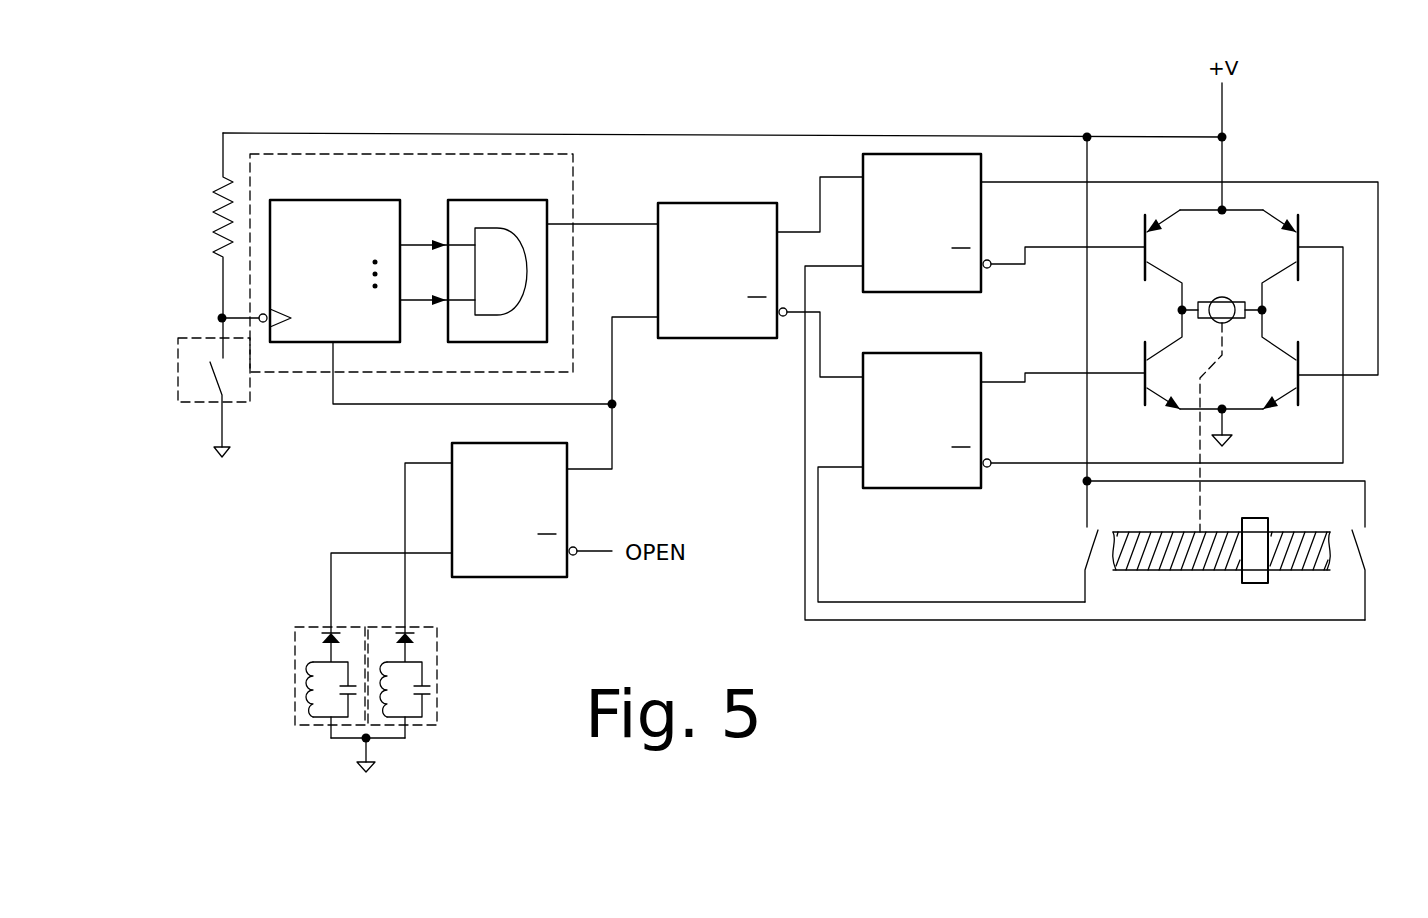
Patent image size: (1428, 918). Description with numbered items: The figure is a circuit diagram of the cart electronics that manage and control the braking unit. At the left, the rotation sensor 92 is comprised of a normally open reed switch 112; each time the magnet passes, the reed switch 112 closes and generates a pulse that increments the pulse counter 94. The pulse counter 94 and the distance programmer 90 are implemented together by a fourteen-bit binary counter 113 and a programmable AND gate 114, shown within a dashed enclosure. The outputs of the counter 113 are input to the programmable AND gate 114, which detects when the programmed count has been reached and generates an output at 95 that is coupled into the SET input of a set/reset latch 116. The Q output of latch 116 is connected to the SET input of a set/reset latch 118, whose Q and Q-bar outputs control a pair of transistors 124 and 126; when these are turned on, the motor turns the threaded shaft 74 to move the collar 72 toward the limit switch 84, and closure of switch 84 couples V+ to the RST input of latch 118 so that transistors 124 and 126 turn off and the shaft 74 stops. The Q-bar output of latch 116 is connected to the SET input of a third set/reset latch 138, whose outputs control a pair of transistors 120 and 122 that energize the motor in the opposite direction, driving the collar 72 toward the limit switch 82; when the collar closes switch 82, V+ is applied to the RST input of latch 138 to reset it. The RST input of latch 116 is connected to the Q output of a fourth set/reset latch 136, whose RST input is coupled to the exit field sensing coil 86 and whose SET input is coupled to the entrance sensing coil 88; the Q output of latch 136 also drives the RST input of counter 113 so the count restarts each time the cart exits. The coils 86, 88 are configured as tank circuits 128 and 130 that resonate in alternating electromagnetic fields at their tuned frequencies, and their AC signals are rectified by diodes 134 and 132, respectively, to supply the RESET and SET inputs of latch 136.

The collar 72 is at (1262, 583).
The threaded shaft 74 is at (1215, 572).
The limit switch 82 is at (1090, 548).
The limit switch 84 is at (1372, 552).
The exit field sensing coil 86 is at (440, 690).
The entrance sensing coil 88 is at (297, 690).
The distance programmer 90 is at (392, 375).
The rotation sensor 92 is at (236, 403).
The pulse counter 94 is at (411, 263).
The output 95 is at (598, 224).
The reed switch 112 is at (210, 362).
The 14-bit binary counter 113 is at (347, 200).
The programmable AND gate 114 is at (515, 200).
The set/reset latch 116 is at (705, 340).
The set/reset latch 118 is at (862, 165).
The transistor 120 is at (1300, 222).
The transistor 122 is at (1148, 395).
The transistor 124 is at (1146, 218).
The transistor 126 is at (1298, 400).
The tank circuit 128 is at (310, 718).
The tank circuit 130 is at (415, 720).
The diode 132 is at (405, 635).
The diode 134 is at (330, 635).
The set/reset latch 136 is at (540, 580).
The set/reset latch 138 is at (930, 490).